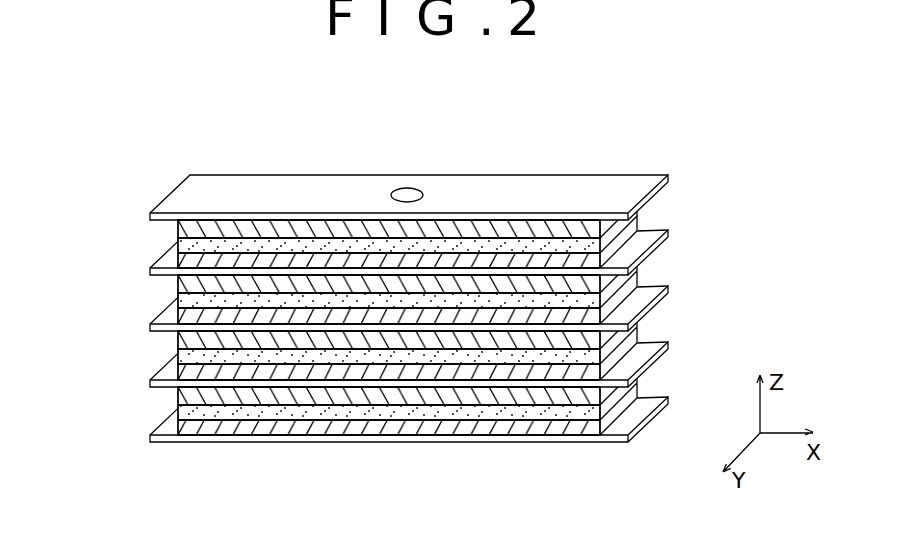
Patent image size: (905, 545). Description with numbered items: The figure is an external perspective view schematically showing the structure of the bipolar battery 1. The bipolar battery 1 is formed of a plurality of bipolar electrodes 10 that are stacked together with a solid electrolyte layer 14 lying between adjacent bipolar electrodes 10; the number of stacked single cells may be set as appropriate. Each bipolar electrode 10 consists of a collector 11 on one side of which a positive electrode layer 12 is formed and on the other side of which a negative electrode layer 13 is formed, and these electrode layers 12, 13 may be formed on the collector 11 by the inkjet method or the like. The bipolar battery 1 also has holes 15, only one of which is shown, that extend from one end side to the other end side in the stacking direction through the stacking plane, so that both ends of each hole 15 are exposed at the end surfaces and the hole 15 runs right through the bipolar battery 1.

The bipolar battery 1 is at (133, 447).
The bipolar electrode 10 is at (757, 223).
The collector 11 is at (603, 273).
The positive electrode layer 12 is at (590, 262).
The negative electrode layer 13 is at (588, 303).
The solid electrolyte layer 14 is at (184, 248).
The hole 15 is at (412, 183).